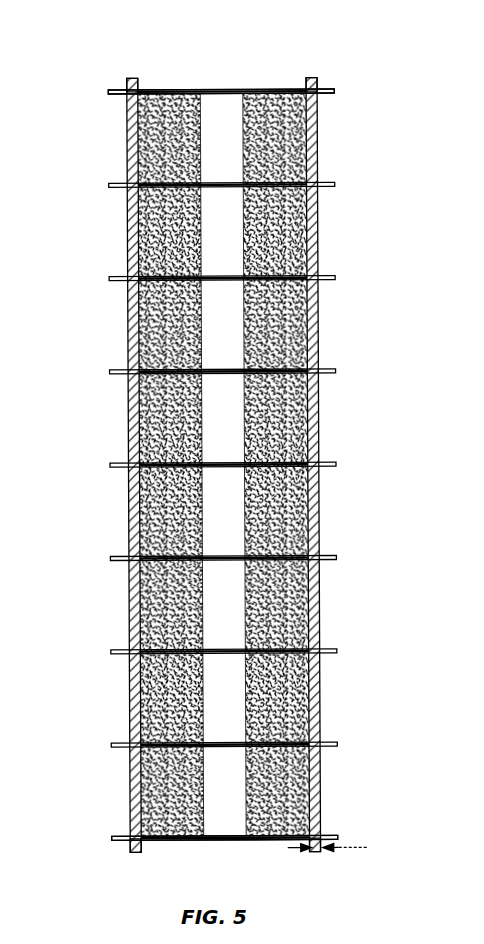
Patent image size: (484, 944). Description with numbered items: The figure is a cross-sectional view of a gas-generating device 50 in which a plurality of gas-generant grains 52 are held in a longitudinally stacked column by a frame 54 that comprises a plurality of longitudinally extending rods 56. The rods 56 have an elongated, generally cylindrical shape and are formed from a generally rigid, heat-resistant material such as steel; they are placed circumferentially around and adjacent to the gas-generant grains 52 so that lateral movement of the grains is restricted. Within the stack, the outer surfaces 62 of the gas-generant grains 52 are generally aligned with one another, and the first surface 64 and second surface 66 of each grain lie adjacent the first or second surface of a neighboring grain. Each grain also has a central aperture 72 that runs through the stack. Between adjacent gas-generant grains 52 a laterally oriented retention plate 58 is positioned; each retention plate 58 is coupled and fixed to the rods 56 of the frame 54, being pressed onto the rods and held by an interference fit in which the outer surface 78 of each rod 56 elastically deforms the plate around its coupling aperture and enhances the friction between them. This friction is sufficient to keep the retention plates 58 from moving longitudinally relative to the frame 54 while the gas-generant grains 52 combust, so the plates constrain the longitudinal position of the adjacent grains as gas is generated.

The gas-generating device 50 is at (86, 134).
The gas-generant grains 52 is at (150, 147).
The frame 54 is at (270, 31).
The rods 56 is at (133, 78).
The retention plate 58 is at (145, 219).
The outer surface 62 is at (319, 135).
The first surface 64 is at (318, 207).
The second surface 66 is at (308, 162).
The central aperture 72 is at (221, 110).
The outer surface of rod 78 is at (322, 83).